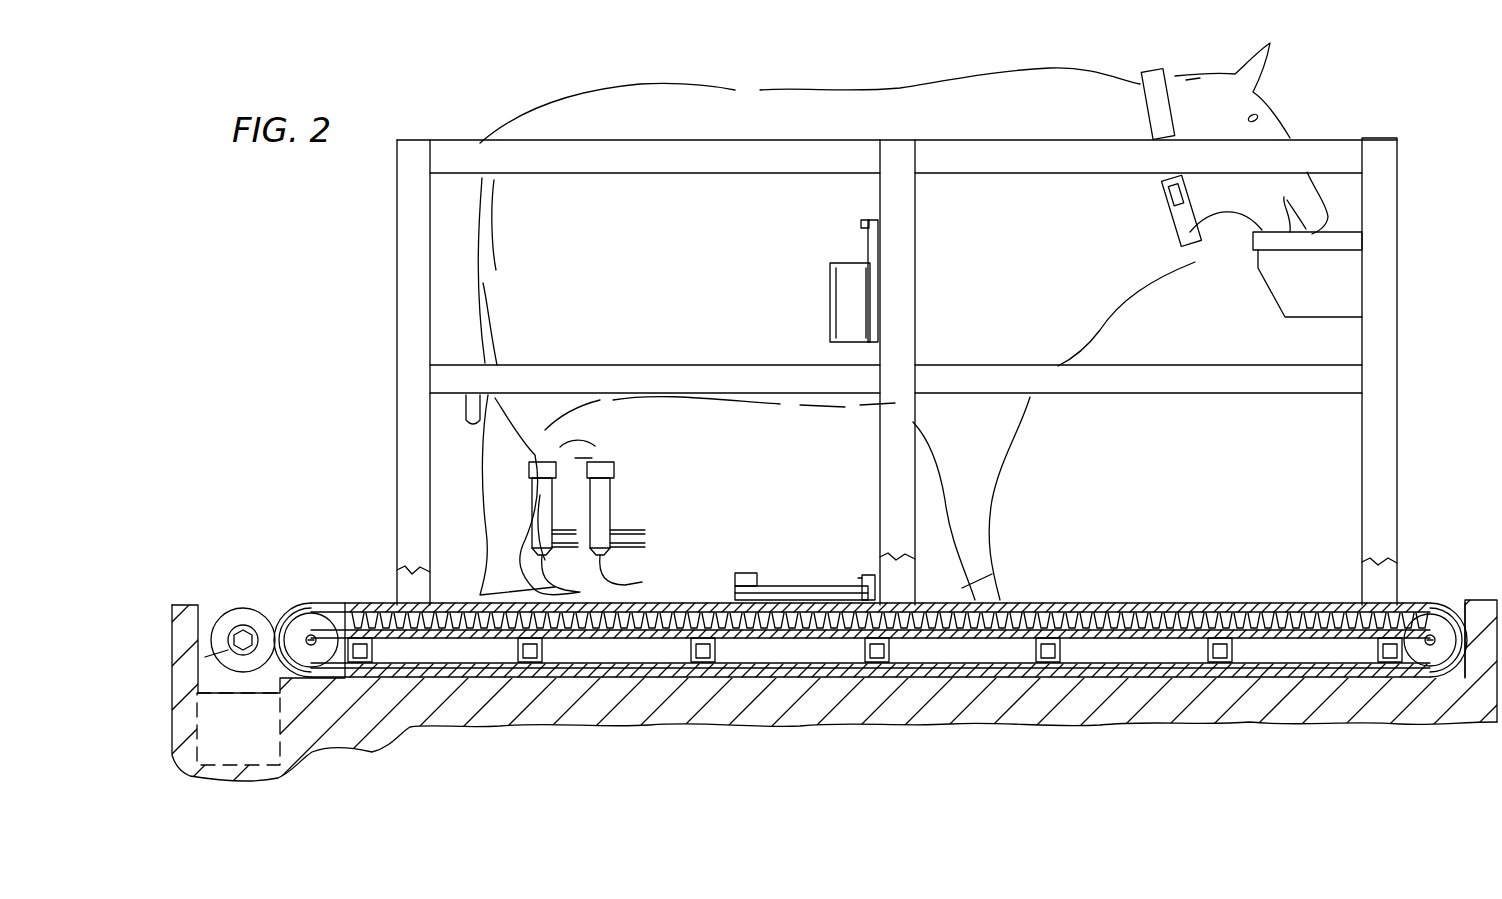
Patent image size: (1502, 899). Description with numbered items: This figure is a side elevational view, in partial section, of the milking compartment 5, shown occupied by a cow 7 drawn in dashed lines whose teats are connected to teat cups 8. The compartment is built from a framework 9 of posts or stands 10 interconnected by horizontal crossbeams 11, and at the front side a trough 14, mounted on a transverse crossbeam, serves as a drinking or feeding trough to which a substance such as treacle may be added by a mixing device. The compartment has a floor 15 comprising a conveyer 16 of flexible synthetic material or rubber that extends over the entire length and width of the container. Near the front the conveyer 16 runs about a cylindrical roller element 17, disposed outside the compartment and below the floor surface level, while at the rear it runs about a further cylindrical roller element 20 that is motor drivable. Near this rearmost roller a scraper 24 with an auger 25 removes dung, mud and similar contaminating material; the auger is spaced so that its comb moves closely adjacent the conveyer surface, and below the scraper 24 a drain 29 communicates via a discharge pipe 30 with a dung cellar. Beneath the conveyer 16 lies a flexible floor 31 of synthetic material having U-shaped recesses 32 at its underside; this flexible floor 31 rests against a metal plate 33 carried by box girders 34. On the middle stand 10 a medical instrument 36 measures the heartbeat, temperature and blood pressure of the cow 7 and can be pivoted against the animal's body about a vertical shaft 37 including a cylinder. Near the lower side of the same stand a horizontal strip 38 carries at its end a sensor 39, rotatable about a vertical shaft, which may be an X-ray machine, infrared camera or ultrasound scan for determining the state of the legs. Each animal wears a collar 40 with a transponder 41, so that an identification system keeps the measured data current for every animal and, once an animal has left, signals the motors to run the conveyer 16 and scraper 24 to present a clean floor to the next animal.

The milking compartment 5 is at (1186, 468).
The cow 7 is at (620, 88).
The teat cups 8 is at (552, 523).
The framework 9 is at (733, 180).
The posts or stands 10 is at (407, 241).
The horizontal crossbeams 11 is at (632, 160).
The trough 14 is at (1280, 290).
The floor 15 is at (870, 606).
The conveyer 16 is at (1260, 580).
The cylindrical roller element 17 is at (1437, 613).
The further cylindrical roller element 20 is at (307, 616).
The scraper 24 is at (268, 577).
The auger 25 is at (342, 608).
The drain 29 is at (268, 718).
The discharge pipe 30 is at (190, 752).
The flexible floor 31 is at (1063, 600).
The U-shaped recesses 32 is at (700, 604).
The metal plate 33 is at (670, 634).
The box girders 34 is at (513, 648).
The medical instrument 36 is at (832, 310).
The vertical shaft 37 is at (883, 297).
The horizontal strip 38 is at (805, 565).
The sensor 39 is at (746, 574).
The collar 40 is at (1146, 99).
The transponder 41 is at (1172, 202).